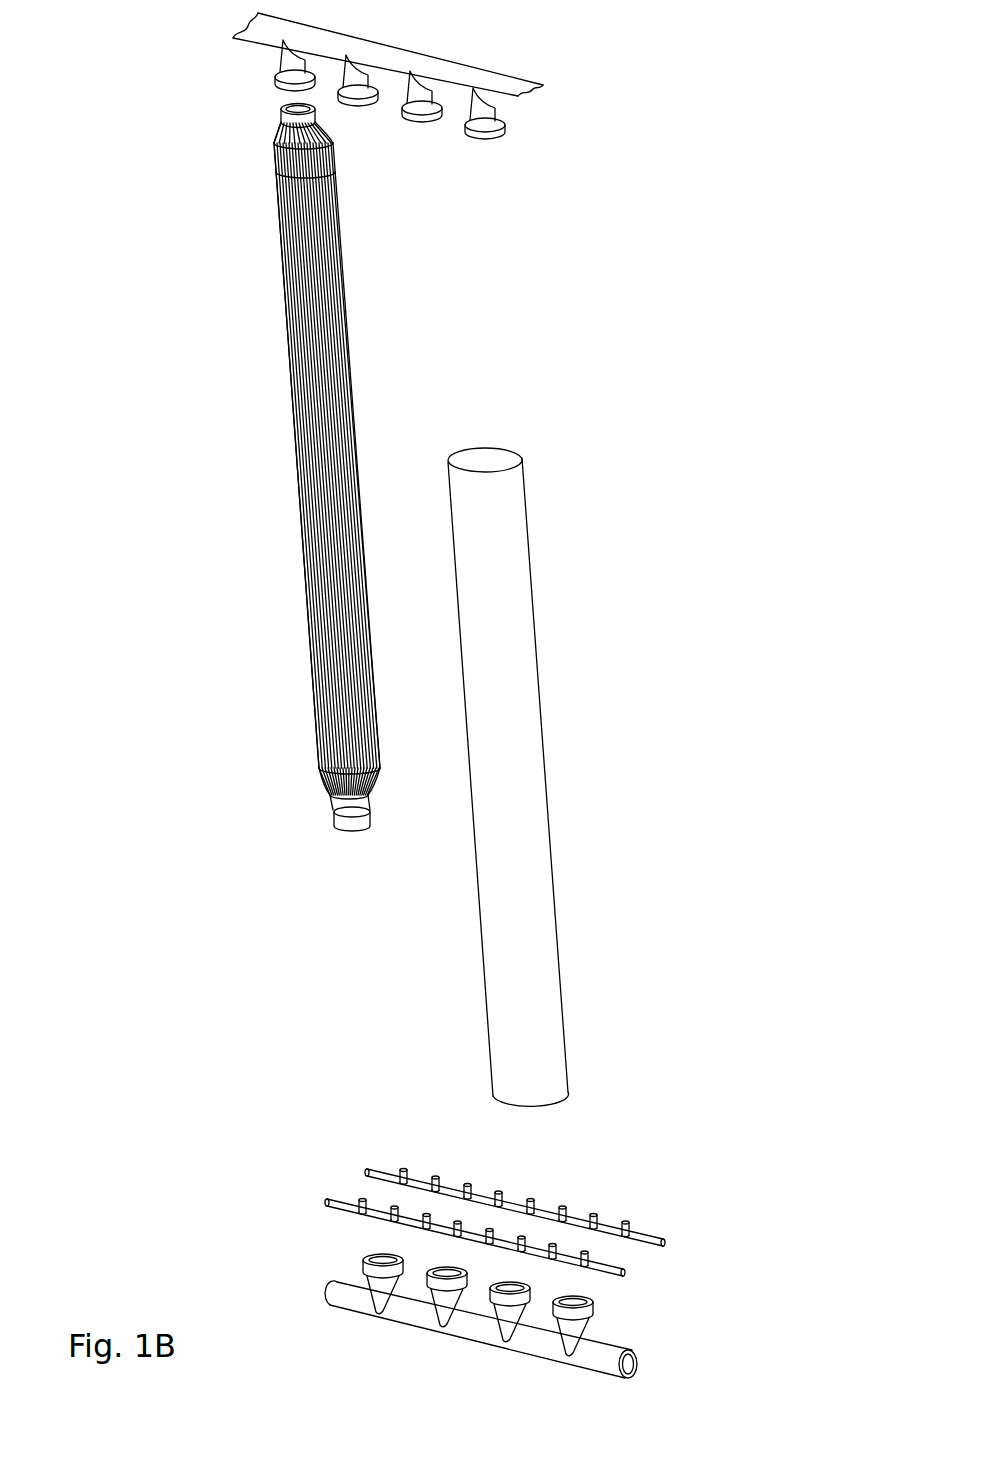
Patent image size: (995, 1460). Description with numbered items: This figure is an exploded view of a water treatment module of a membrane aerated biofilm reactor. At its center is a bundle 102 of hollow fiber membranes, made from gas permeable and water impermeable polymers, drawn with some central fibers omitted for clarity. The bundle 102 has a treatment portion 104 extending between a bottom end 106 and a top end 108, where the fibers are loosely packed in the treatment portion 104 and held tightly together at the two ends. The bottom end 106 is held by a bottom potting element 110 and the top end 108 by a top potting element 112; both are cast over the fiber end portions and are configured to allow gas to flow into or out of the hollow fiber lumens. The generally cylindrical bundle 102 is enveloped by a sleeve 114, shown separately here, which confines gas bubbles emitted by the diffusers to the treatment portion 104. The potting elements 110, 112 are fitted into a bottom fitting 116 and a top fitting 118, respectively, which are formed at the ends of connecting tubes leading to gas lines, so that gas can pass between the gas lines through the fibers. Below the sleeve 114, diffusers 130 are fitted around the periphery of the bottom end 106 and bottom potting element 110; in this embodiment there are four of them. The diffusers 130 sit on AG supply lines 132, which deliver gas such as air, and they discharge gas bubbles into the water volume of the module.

The bundle of hollow fiber membranes 102 is at (318, 410).
The treatment portion 104 is at (300, 346).
The bottom end 106 is at (369, 797).
The top end 108 is at (277, 138).
The bottom potting element 110 is at (343, 818).
The top potting element 112 is at (314, 118).
The sleeve 114 is at (523, 797).
The bottom fitting 116 is at (363, 1262).
The top fitting 118 is at (283, 86).
The diffusers 130 is at (403, 1168).
The AG supply line 132 is at (627, 1273).